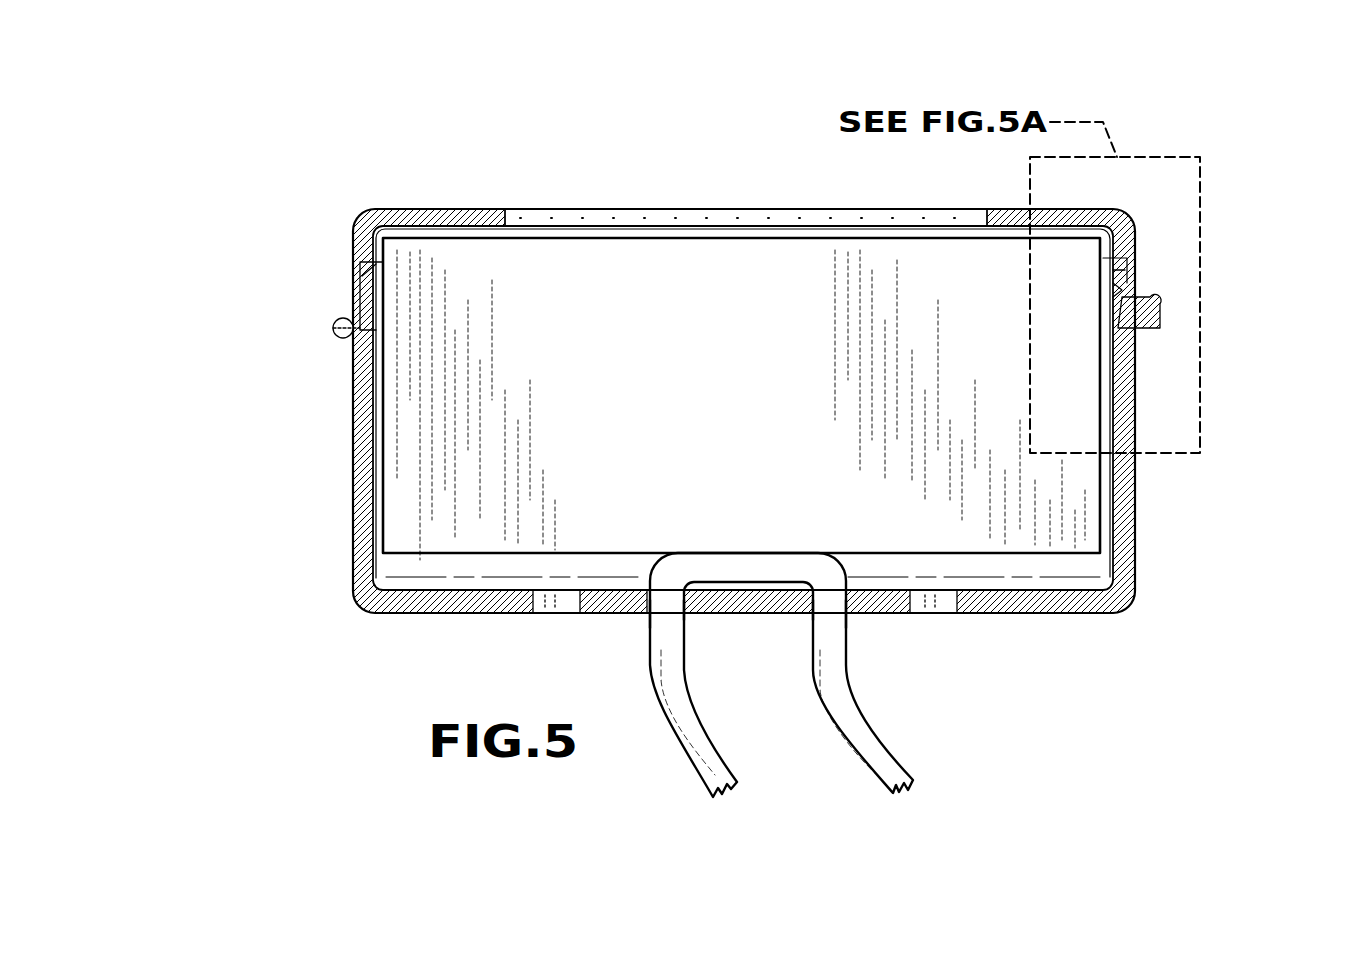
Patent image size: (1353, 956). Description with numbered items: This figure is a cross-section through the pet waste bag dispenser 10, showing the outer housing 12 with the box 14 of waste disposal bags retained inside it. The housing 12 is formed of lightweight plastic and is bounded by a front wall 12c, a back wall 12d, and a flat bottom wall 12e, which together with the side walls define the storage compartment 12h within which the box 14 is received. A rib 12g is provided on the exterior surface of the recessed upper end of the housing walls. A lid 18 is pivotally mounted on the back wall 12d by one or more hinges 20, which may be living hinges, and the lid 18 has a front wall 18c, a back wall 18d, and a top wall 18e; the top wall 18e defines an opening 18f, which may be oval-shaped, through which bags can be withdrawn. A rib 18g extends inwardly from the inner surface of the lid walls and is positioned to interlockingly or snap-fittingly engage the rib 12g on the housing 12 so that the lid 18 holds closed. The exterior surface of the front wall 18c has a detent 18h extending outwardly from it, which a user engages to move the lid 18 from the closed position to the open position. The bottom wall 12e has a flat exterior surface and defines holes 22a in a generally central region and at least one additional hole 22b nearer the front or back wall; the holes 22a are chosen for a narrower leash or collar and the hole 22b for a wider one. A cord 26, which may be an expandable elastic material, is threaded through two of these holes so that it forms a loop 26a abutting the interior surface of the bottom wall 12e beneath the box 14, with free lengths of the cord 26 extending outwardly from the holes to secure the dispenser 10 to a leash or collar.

The pet waste bag dispenser 10 is at (670, 96).
The outer housing 12 is at (348, 430).
The front wall 12c is at (1136, 470).
The back wall 12d is at (353, 489).
The bottom wall 12e is at (404, 614).
The rib 12g is at (1118, 283).
The storage compartment 12h is at (1040, 562).
The box 14 is at (480, 270).
The lid 18 is at (410, 204).
The front wall 18c is at (1130, 275).
The back wall 18d is at (357, 280).
The top wall 18e is at (988, 209).
The opening 18f is at (506, 219).
The rib 18g is at (1137, 292).
The detent 18h is at (1162, 321).
The hinge 20 is at (336, 330).
The holes 22a is at (811, 611).
The hole 22b is at (580, 612).
The cord 26 is at (816, 700).
The loop 26a is at (790, 575).